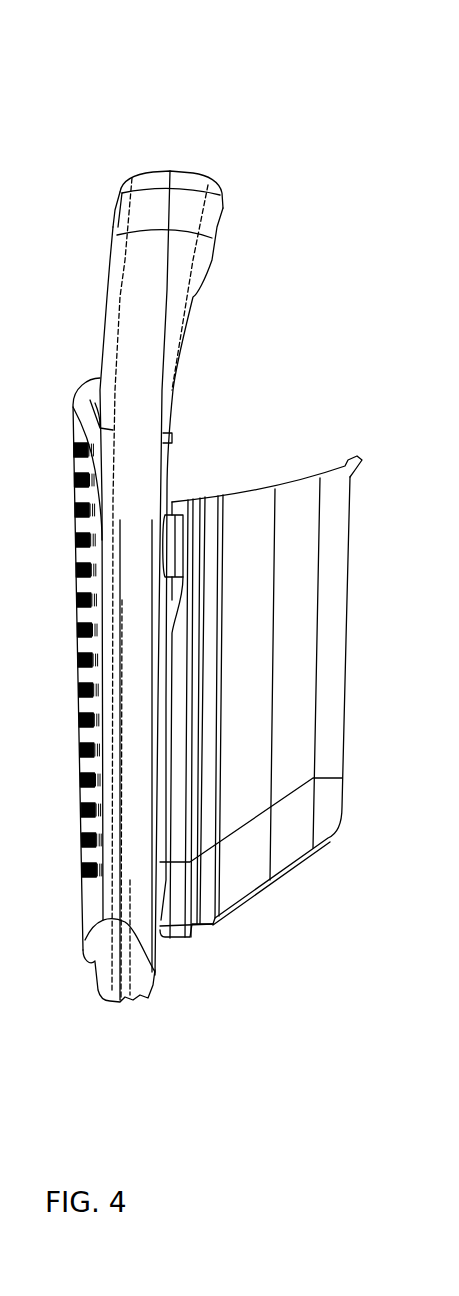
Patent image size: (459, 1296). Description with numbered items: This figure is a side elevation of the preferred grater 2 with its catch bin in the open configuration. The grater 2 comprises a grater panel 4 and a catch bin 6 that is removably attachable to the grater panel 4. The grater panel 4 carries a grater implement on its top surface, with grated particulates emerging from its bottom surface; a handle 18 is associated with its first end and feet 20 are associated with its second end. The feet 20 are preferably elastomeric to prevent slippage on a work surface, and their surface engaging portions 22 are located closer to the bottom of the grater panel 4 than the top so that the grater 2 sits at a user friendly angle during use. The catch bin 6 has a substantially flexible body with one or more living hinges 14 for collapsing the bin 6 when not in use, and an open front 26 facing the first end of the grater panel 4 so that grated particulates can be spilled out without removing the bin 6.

The grater 2 is at (171, 82).
The grater panel 4 is at (163, 390).
The catch bin 6 is at (282, 683).
The living hinges 14 is at (270, 772).
The handle 18 is at (187, 202).
The feet 20 is at (103, 982).
The surface engaging portions 22 is at (128, 993).
The open front 26 is at (263, 490).